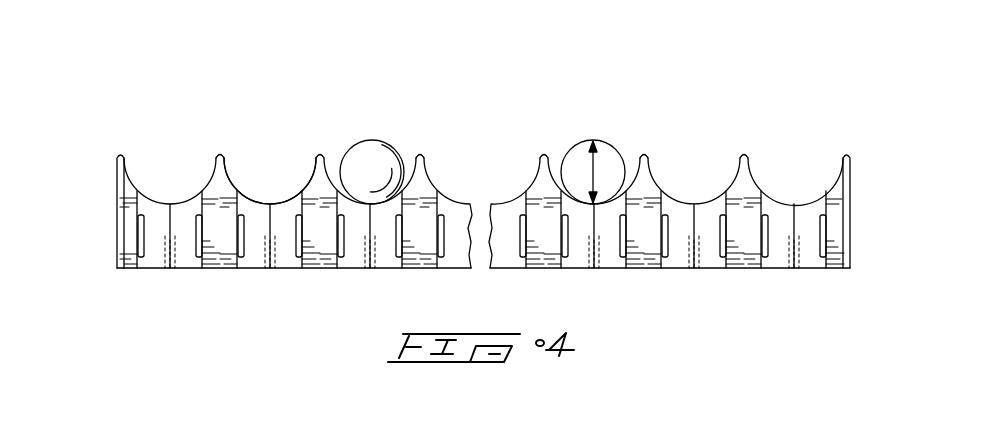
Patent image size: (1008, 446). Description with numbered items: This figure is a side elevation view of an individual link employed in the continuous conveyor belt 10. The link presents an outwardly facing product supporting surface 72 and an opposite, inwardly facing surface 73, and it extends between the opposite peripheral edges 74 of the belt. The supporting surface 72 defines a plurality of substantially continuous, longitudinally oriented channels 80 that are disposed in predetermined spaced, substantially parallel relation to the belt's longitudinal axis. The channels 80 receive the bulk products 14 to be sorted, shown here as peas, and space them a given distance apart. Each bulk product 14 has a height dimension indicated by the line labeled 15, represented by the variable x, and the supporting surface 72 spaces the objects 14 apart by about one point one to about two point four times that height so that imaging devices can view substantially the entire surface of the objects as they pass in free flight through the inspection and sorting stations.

The continuous conveyor belt 10 is at (685, 68).
The bulk product 14 is at (369, 155).
The height dimension 15 is at (584, 165).
The product supporting surface 72 is at (293, 198).
The inwardly facing surface 73 is at (316, 269).
The peripheral edges 74 is at (117, 213).
The longitudinally oriented channels 80 is at (255, 161).